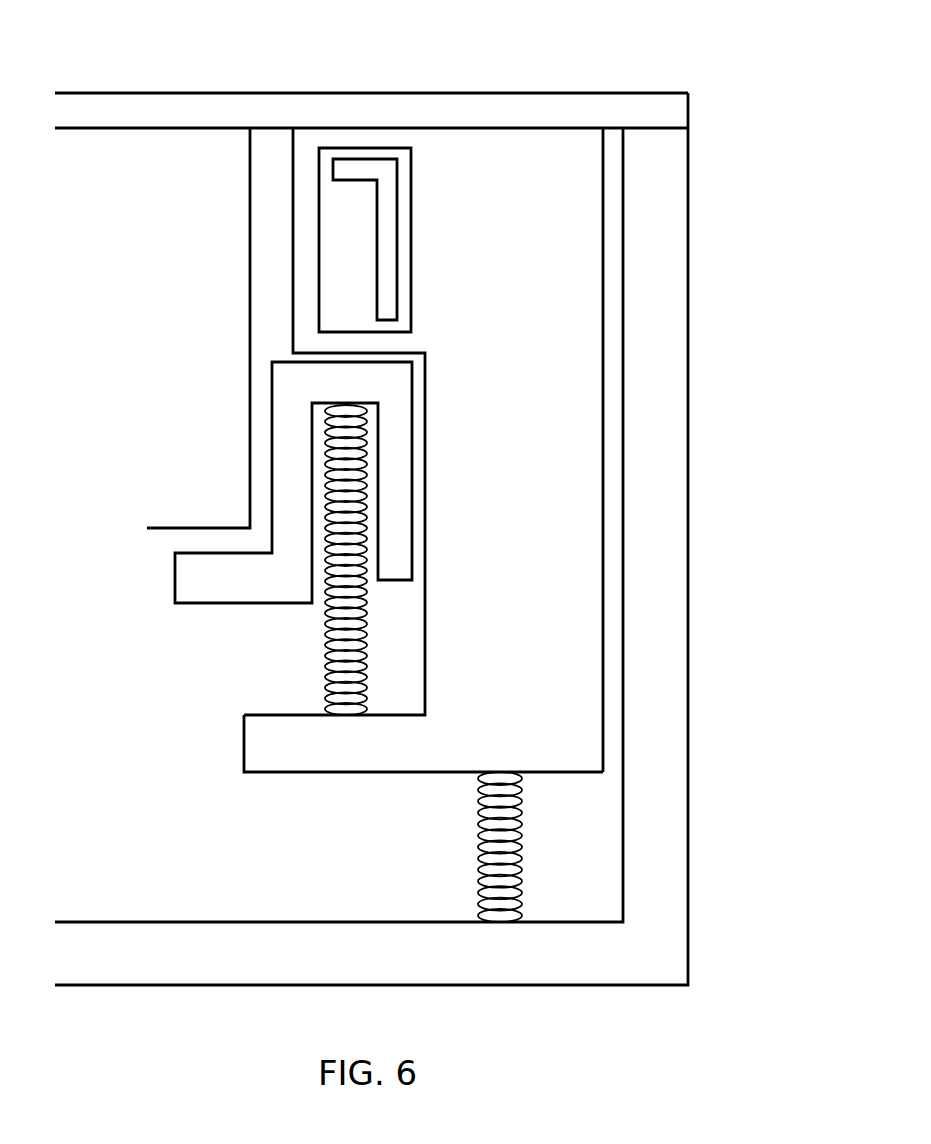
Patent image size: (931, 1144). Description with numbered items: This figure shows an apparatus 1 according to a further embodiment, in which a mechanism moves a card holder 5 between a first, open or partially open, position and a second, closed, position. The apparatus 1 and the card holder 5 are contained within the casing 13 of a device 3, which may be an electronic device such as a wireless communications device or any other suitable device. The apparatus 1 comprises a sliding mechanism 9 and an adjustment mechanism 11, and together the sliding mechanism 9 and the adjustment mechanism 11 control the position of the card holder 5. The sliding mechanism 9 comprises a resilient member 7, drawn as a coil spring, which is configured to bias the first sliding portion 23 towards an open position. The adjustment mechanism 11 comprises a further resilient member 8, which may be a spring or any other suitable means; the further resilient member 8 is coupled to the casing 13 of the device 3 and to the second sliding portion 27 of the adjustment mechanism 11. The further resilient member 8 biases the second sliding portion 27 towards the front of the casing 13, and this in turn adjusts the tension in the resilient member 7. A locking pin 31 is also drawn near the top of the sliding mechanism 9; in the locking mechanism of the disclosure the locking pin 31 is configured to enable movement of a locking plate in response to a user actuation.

The apparatus 1 is at (557, 253).
The device 3 is at (516, 93).
The card holder 5 is at (163, 168).
The resilient member 7 is at (363, 668).
The further resilient member 8 is at (522, 875).
The sliding mechanism 9 is at (404, 442).
The adjustment mechanism 11 is at (582, 525).
The casing 13 is at (645, 93).
The first sliding portion 23 is at (405, 415).
The second sliding portion 27 is at (578, 464).
The locking pin 31 is at (363, 168).